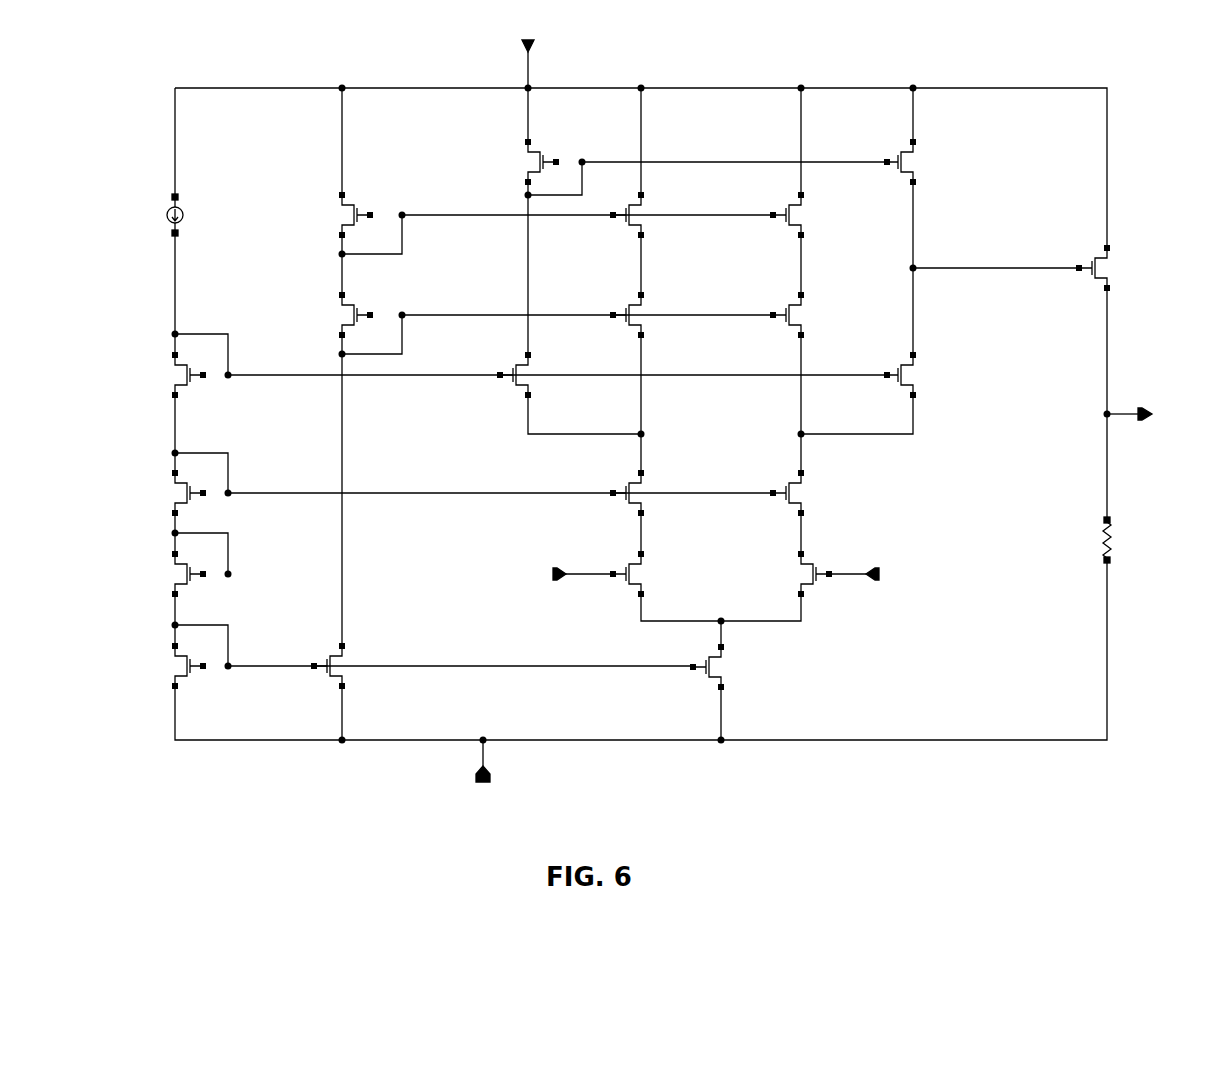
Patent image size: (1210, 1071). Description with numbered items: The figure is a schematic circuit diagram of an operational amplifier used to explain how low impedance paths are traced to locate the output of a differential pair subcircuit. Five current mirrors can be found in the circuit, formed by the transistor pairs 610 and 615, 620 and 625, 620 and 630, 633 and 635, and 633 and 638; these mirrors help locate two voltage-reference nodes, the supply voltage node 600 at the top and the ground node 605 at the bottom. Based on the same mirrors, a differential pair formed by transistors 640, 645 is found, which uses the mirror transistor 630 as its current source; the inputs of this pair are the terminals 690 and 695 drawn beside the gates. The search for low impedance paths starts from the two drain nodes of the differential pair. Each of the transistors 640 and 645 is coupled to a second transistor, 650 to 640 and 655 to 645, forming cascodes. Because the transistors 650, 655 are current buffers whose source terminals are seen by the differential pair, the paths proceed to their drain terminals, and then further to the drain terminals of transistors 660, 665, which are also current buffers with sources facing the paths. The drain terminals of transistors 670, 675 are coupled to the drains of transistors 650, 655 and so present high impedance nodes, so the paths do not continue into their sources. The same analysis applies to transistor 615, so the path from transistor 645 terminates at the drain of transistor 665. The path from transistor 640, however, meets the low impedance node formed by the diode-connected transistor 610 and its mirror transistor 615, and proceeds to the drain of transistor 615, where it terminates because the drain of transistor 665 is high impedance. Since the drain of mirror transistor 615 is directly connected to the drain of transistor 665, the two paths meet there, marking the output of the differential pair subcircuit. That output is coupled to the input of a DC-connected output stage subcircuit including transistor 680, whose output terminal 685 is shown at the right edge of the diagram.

The supply voltage node 600 is at (505, 57).
The ground node 605 is at (500, 775).
The diode-connected transistor 610 is at (512, 165).
The mirror transistor 615 is at (928, 158).
The transistor 620 is at (205, 683).
The transistor 625 is at (355, 683).
The mirror transistor 630 is at (733, 680).
The transistor 633 is at (325, 206).
The transistor 635 is at (657, 232).
The transistor 638 is at (812, 220).
The transistor 640 is at (610, 590).
The transistor 645 is at (822, 595).
The transistor 650 is at (610, 508).
The transistor 655 is at (815, 498).
The transistor 660 is at (505, 398).
The transistor 665 is at (928, 380).
The transistor 670 is at (615, 300).
The transistor 675 is at (812, 310).
The transistor 680 is at (1120, 275).
The output terminal 685 is at (1137, 433).
The positive input terminal 690 is at (525, 575).
The negative input terminal 695 is at (908, 577).